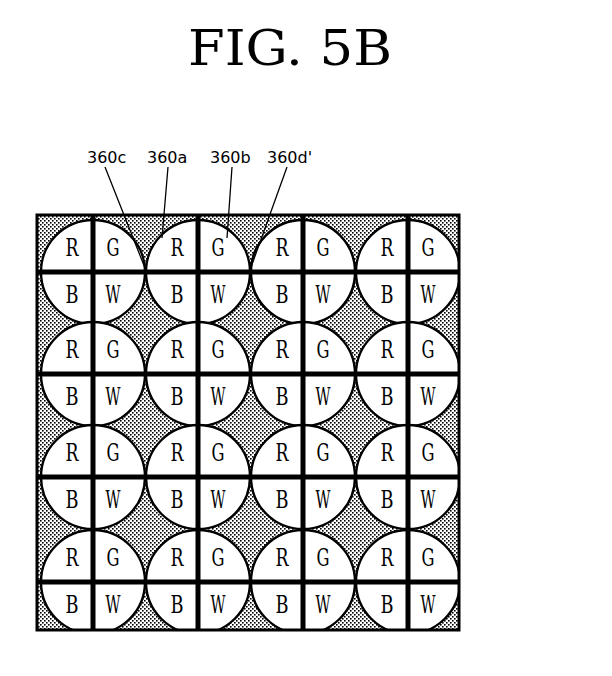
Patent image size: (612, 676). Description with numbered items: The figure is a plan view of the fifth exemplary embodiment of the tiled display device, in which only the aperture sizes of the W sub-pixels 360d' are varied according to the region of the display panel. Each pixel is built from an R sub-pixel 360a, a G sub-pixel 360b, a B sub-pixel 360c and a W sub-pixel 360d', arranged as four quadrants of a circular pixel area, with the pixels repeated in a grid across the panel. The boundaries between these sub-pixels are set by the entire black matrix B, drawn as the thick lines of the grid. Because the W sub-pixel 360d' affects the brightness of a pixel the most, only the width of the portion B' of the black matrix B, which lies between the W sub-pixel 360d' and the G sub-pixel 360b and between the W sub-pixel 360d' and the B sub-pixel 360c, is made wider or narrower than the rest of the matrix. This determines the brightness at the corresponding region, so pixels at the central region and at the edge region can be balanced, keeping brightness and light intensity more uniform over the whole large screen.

The B sub-pixel 360c is at (145, 268).
The R sub-pixel 360a is at (162, 238).
The G sub-pixel 360b is at (227, 238).
The W sub-pixel 360d' is at (302, 236).
The black matrix B is at (459, 339).
The portion of the black matrix B' is at (472, 370).